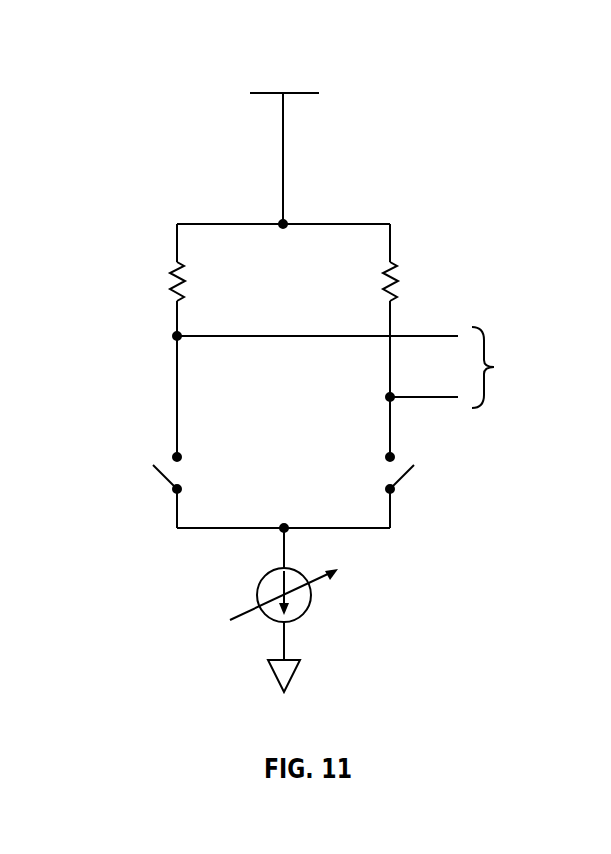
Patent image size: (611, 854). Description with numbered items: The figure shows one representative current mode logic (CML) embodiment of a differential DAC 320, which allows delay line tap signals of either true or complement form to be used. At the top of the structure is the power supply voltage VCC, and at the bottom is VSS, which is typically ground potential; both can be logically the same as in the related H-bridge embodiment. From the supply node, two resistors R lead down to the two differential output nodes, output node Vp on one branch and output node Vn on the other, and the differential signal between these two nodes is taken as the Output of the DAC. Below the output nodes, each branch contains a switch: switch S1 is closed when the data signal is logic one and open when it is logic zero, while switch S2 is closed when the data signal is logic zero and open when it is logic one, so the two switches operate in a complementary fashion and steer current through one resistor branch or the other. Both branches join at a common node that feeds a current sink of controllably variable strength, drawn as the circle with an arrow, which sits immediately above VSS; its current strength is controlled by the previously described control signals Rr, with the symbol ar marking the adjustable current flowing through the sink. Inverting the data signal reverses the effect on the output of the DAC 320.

The DAC 320 is at (163, 52).
The power supply voltage VCC is at (284, 142).
The resistors R is at (185, 280).
The output node Vp is at (296, 337).
The output node Vn is at (403, 375).
The output Output is at (528, 367).
The switch S1 is at (172, 471).
The switch S2 is at (396, 473).
The control signals Rr is at (243, 612).
The current direction ar is at (309, 598).
The element VSS is at (316, 657).